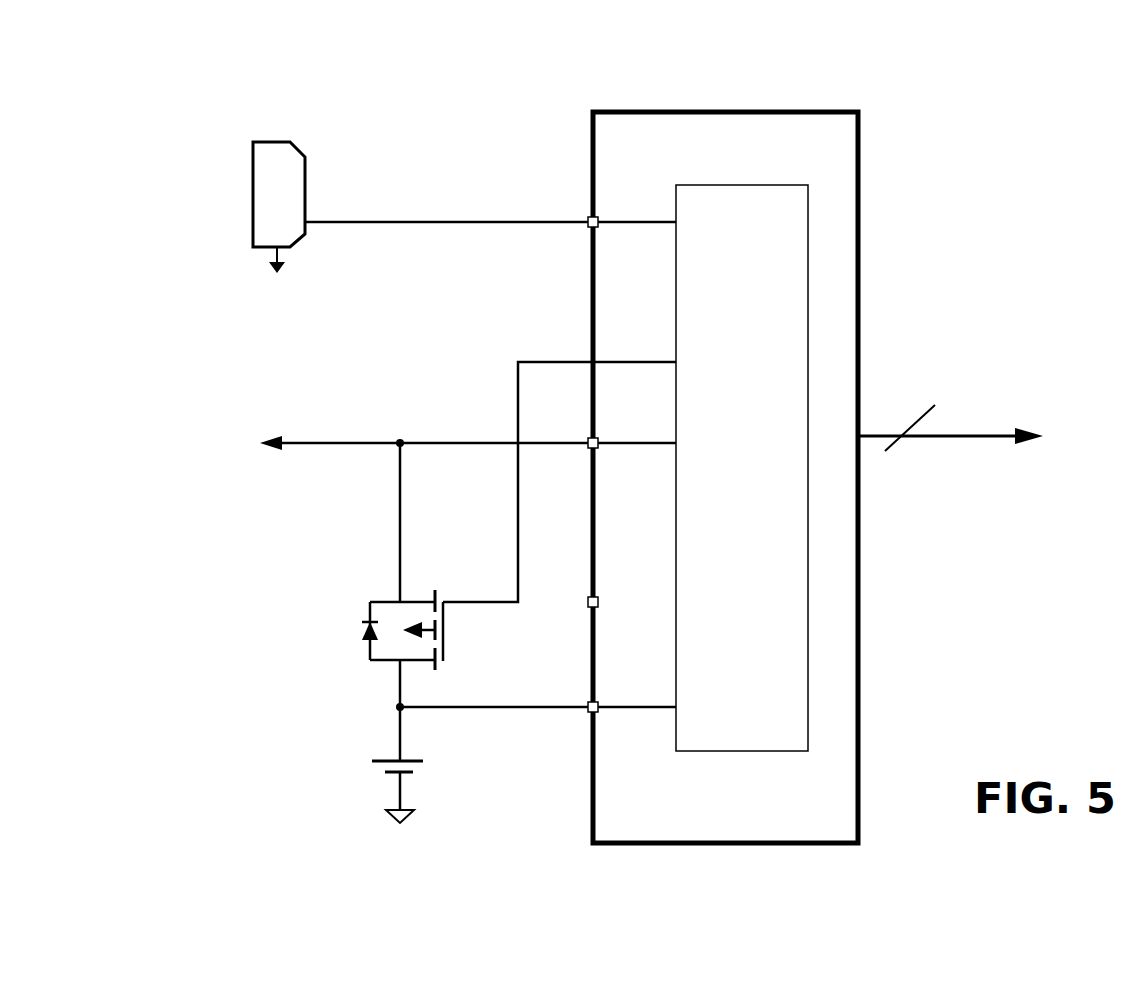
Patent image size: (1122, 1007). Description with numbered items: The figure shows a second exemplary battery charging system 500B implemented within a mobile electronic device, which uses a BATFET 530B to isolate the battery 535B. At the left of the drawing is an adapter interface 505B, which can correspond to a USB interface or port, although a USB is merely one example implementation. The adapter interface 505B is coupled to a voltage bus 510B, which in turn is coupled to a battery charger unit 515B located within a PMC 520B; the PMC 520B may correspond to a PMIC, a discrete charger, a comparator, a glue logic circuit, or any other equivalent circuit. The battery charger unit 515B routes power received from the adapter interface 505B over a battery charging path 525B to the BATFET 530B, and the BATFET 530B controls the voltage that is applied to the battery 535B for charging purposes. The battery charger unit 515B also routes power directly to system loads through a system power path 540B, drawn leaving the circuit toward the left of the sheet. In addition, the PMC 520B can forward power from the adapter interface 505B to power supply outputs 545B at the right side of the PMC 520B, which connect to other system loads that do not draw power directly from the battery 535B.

The battery charging system 500B is at (870, 104).
The adapter interface 505B is at (262, 250).
The voltage bus 510B is at (530, 220).
The battery charger unit 515B is at (740, 751).
The PMC 520B is at (597, 843).
The battery charging path 525B is at (536, 561).
The BATFET 530B is at (372, 660).
The battery 535B is at (400, 825).
The system power path 540B is at (437, 411).
The power supply outputs 545B is at (1000, 438).